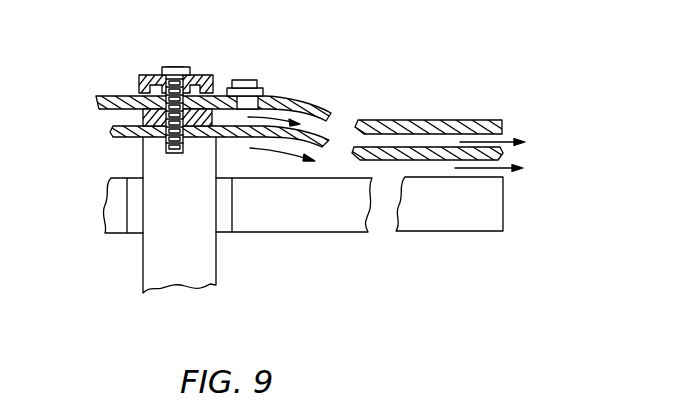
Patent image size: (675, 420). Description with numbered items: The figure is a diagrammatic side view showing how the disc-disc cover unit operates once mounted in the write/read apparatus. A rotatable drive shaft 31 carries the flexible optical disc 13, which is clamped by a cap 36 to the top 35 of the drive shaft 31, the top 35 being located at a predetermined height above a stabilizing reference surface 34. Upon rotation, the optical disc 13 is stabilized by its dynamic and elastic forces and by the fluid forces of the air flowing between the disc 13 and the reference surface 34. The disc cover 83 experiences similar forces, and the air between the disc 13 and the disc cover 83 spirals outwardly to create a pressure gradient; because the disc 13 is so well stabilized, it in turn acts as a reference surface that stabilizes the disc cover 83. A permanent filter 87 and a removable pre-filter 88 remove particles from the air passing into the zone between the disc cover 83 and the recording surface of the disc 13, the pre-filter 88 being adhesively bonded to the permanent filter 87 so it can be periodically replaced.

The optical disc 13 is at (330, 135).
The drive shaft 31 is at (157, 237).
The stabilizing reference surface 34 is at (304, 235).
The top of the drive shaft 35 is at (155, 138).
The cap 36 is at (196, 68).
The disc cover 83 is at (294, 98).
The permanent filter 87 is at (263, 88).
The pre-filter 88 is at (245, 80).